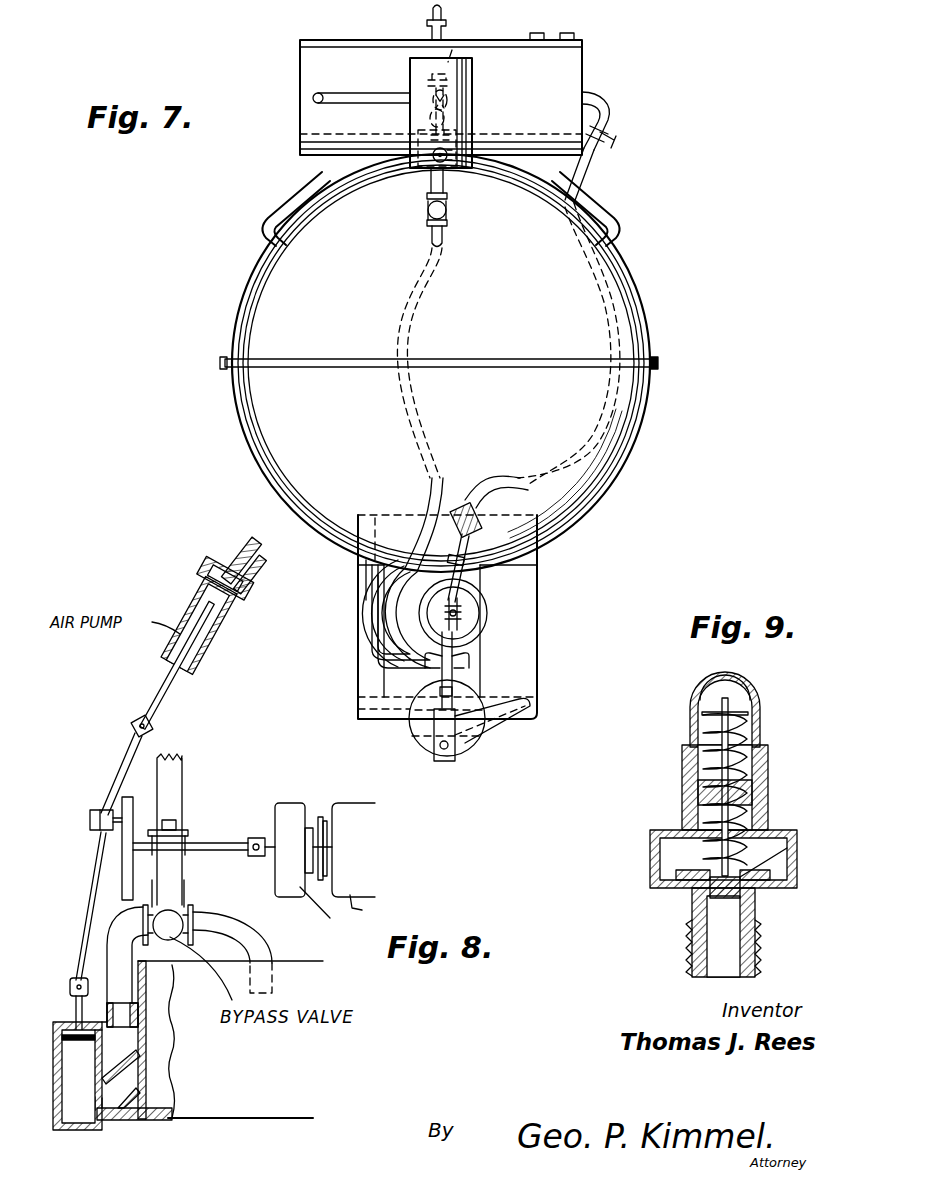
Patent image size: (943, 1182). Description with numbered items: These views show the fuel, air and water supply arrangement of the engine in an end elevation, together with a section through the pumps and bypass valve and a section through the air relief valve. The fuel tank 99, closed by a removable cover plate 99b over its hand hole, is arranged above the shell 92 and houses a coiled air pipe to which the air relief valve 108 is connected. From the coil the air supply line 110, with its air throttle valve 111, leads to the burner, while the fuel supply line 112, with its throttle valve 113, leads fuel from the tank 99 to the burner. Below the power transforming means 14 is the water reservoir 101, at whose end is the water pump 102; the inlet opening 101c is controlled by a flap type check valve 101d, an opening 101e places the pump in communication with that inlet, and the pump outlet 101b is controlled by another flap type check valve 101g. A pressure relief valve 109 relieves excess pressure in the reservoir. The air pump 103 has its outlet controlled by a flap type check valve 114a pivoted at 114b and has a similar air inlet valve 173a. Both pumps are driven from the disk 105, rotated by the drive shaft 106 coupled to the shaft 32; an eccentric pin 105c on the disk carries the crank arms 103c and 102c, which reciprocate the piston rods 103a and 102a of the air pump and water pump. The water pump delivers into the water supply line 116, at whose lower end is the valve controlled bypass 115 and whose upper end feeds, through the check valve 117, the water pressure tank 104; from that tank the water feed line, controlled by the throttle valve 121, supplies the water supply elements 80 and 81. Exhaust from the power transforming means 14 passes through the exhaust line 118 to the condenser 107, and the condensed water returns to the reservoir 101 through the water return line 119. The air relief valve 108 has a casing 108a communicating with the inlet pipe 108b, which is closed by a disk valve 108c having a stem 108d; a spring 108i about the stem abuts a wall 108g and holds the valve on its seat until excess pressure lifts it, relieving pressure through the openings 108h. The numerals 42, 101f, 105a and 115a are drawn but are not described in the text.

In FIG. 7, the power transforming means 14 is at (482, 600).
In FIG. 8, the power transforming means 14 is at (362, 906).
In FIG. 8, the shaft 32 is at (322, 855).
In FIG. 7, the coiled hose / block 42 is at (412, 616).
In FIG. 8, the coiled hose / block 42 is at (296, 803).
In FIG. 7, the water supply element 80 is at (598, 203).
In FIG. 7, the water supply element 81 is at (296, 196).
In FIG. 7, the shell 92 is at (640, 408).
In FIG. 7, the fuel tank 99 is at (340, 55).
In FIG. 7, the removable cover plate 99b is at (551, 38).
In FIG. 7, the water reservoir 101 is at (438, 745).
In FIG. 8, the pump outlet 101b is at (147, 1049).
In FIG. 8, the inlet opening 101c is at (170, 1118).
In FIG. 8, the flap type check valve 101d is at (140, 1100).
In FIG. 8, the opening 101e is at (86, 1118).
In FIG. 8, the valve port 101f is at (120, 1012).
In FIG. 8, the flap type check valve 101g is at (132, 1073).
In FIG. 7, the water pump 102 is at (440, 728).
In FIG. 7, the piston rod 102a is at (420, 706).
In FIG. 7, the crank arm 102c is at (440, 632).
In FIG. 8, the crank arm 102c is at (84, 930).
In FIG. 7, the air pump 103 is at (477, 497).
In FIG. 8, the air pump 103 is at (214, 650).
In FIG. 7, the piston rod 103a is at (485, 560).
In FIG. 7, the crank arm 103c is at (475, 570).
In FIG. 8, the crank arm 103c is at (130, 758).
In FIG. 7, the water pressure tank 104 is at (472, 78).
In FIG. 7, the disk 105 is at (470, 588).
In FIG. 8, the disk 105 is at (130, 815).
In FIG. 7, the drum 105a is at (488, 615).
In FIG. 8, the eccentric pin 105c is at (90, 818).
In FIG. 7, the drive shaft 106 is at (442, 614).
In FIG. 8, the drive shaft 106 is at (222, 842).
In FIG. 7, the condenser 107 is at (540, 690).
In FIG. 7, the air relief valve 108 is at (428, 18).
In FIG. 9, the air relief valve 108 is at (770, 780).
In FIG. 9, the casing 108a is at (796, 890).
In FIG. 9, the inlet pipe 108b is at (692, 905).
In FIG. 9, the disk valve 108c is at (680, 870).
In FIG. 9, the valve stem 108d is at (770, 858).
In FIG. 9, the wall 108g is at (760, 704).
In FIG. 9, the openings 108h is at (715, 675).
In FIG. 9, the spring 108i is at (700, 735).
In FIG. 7, the pressure relief valve 109 is at (470, 668).
In FIG. 7, the air supply line 110 is at (335, 93).
In FIG. 7, the air throttle valve 111 is at (425, 80).
In FIG. 7, the fuel supply line 112 is at (430, 118).
In FIG. 7, the throttle valve 113 is at (464, 43).
In FIG. 7, the flap type check valve 114a is at (602, 152).
In FIG. 8, the flap type check valve 114a is at (256, 548).
In FIG. 7, the pivot 114b is at (610, 131).
In FIG. 8, the pivot 114b is at (258, 576).
In FIG. 7, the valve controlled bypass 115 is at (460, 648).
In FIG. 8, the valve controlled bypass 115 is at (207, 913).
In FIG. 8, the bypass pipe 115a is at (264, 952).
In FIG. 7, the water supply line 116 is at (428, 268).
In FIG. 7, the check valve 117 is at (428, 212).
In FIG. 7, the exhaust line 118 is at (364, 568).
In FIG. 7, the water return line 119 is at (500, 728).
In FIG. 7, the throttle valve 121 is at (466, 136).
In FIG. 8, the air inlet valve 173a is at (198, 576).